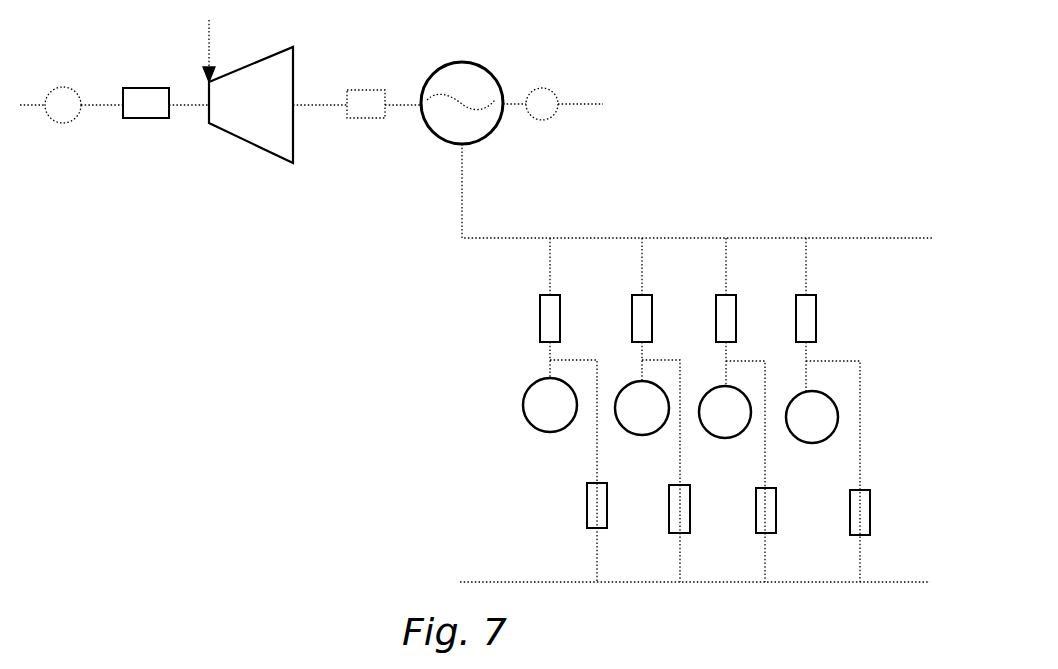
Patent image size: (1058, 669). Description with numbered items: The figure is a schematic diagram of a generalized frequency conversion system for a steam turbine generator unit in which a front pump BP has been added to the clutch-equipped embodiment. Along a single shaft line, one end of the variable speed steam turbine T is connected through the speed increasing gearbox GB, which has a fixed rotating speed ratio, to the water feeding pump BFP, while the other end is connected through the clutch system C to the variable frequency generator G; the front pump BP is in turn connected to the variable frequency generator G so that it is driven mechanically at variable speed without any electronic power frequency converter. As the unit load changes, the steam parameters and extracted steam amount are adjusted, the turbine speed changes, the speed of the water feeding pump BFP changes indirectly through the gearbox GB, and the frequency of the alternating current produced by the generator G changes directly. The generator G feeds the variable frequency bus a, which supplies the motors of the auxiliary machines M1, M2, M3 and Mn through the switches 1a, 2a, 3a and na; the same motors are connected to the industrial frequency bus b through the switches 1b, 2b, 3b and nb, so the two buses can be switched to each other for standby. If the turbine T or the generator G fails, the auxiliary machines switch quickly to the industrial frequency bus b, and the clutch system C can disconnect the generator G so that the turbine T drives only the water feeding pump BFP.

The water feeding pump BFP is at (63, 105).
The speed increasing gearbox GB is at (146, 103).
The variable speed steam turbine T is at (248, 105).
The clutch system C is at (366, 104).
The variable frequency generator G is at (462, 103).
The front pump BP is at (542, 104).
The variable frequency bus a is at (697, 191).
The industrial frequency bus b is at (695, 600).
The switch between auxiliary machine and variable frequency bus 1a is at (568, 318).
The switch between auxiliary machine and variable frequency bus 2a is at (660, 318).
The switch between auxiliary machine and variable frequency bus 3a is at (744, 318).
The switch between auxiliary machine and variable frequency bus na is at (825, 318).
The switch between auxiliary machine and industrial frequency bus 1b is at (616, 505).
The switch between auxiliary machine and industrial frequency bus 2b is at (697, 509).
The switch between auxiliary machine and industrial frequency bus 3b is at (784, 510).
The switch between auxiliary machine and industrial frequency bus nb is at (879, 512).
The motor of auxiliary machine M1 is at (550, 405).
The motor of auxiliary machine M2 is at (642, 408).
The motor of auxiliary machine M3 is at (725, 412).
The motor of auxiliary machine Mn is at (812, 417).